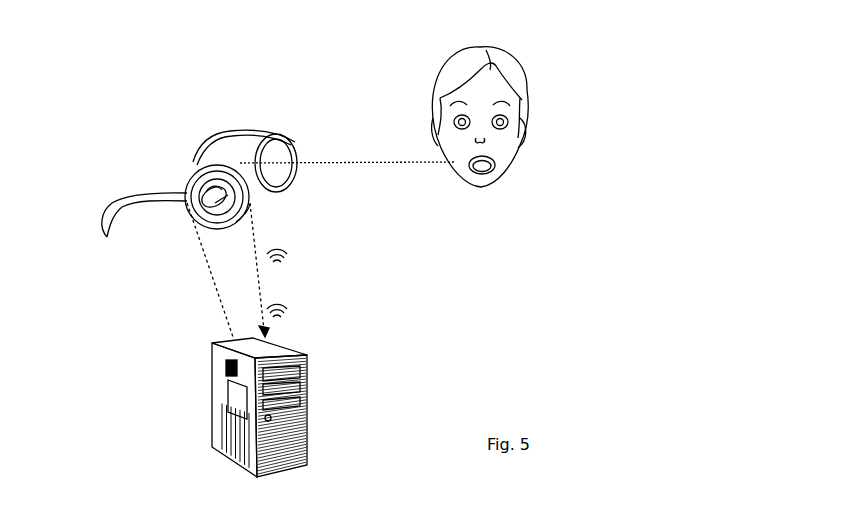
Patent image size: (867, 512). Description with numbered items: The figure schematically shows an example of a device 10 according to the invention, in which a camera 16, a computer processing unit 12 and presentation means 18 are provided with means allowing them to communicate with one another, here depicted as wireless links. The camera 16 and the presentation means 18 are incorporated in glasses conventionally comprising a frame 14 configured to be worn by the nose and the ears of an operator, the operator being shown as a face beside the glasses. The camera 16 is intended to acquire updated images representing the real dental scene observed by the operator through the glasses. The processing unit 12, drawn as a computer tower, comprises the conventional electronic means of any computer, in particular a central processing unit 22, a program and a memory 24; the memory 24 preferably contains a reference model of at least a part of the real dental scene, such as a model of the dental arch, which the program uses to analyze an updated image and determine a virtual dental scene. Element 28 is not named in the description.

The device 10 is at (307, 98).
The computer processing unit 12 is at (328, 411).
The frame 14 is at (107, 212).
The camera 16 is at (247, 163).
The presentation means 18 is at (215, 180).
The central processing unit 22 is at (222, 437).
The memory 24 is at (230, 392).
The sensor 28 is at (250, 212).